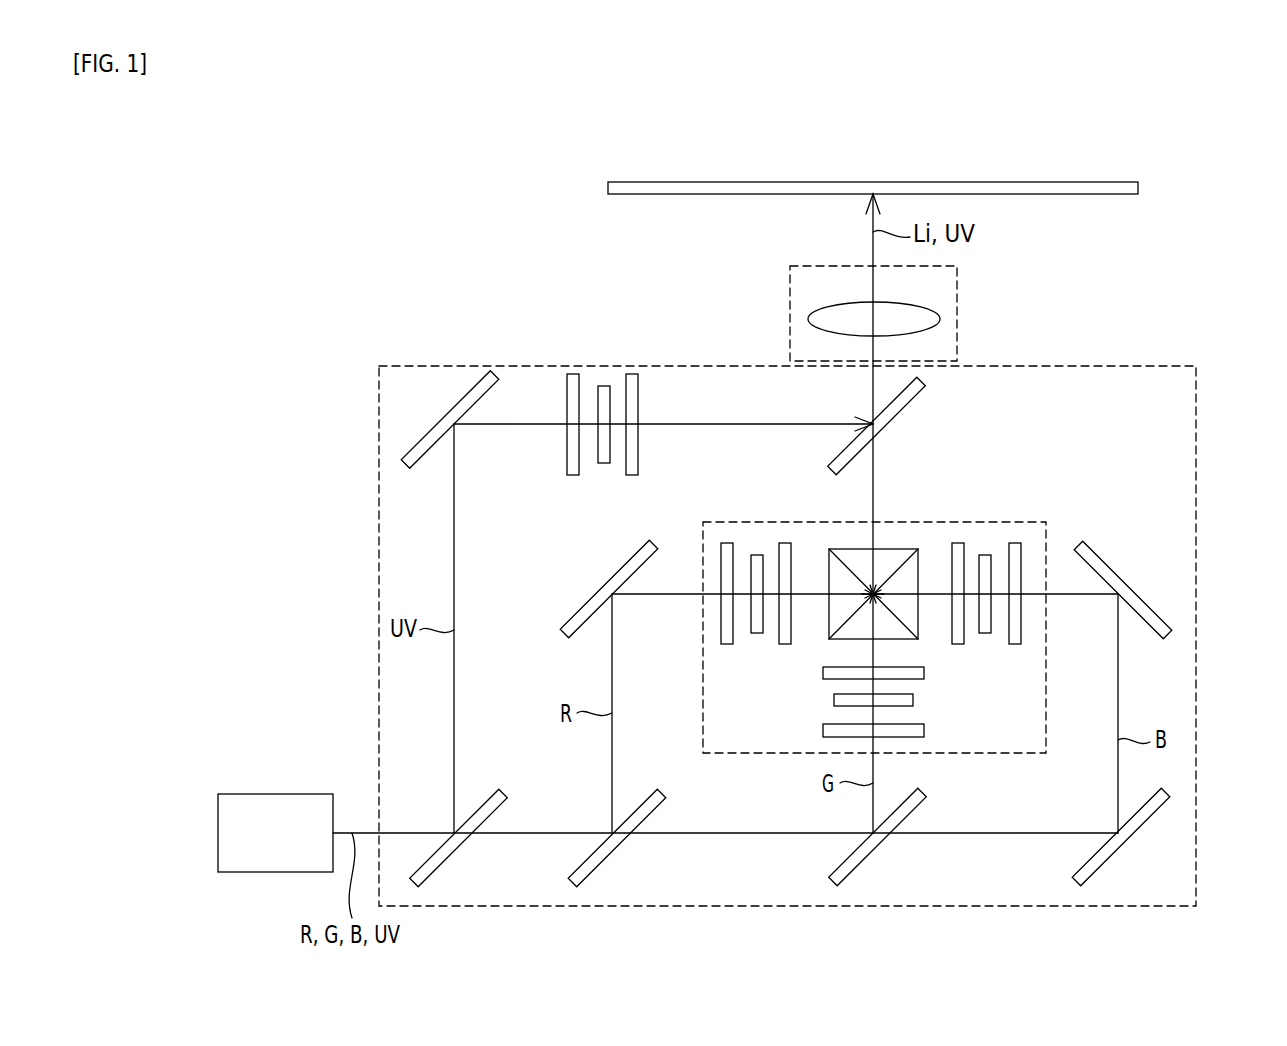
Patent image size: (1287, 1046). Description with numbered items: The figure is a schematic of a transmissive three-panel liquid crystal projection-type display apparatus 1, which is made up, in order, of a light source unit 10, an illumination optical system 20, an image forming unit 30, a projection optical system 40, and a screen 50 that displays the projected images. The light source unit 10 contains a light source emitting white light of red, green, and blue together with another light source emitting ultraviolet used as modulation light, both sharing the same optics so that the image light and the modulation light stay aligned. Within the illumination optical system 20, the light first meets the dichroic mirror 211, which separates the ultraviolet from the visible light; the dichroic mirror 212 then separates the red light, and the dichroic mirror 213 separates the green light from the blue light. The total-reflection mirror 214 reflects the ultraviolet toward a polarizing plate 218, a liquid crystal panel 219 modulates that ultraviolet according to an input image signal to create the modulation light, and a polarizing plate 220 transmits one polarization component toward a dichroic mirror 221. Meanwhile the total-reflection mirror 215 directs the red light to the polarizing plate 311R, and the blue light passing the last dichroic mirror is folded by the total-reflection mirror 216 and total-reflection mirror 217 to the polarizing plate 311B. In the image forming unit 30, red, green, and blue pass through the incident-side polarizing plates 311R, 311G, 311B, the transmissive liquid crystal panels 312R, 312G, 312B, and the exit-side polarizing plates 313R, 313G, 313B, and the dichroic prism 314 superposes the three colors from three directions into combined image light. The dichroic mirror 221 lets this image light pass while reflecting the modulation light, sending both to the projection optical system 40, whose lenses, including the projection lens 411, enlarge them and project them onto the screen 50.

The projection-type display apparatus 1 is at (1175, 162).
The light source unit 10 is at (273, 794).
The illumination optical system 20 is at (1196, 522).
The image forming unit 30 is at (1046, 690).
The projection optical system 40 is at (957, 310).
The screen 50 is at (608, 188).
The dichroic mirror 211 is at (505, 793).
The dichroic mirror 212 is at (662, 793).
The dichroic mirror 213 is at (832, 885).
The total-reflection mirror 214 is at (497, 375).
The total-reflection mirror 215 is at (655, 545).
The total-reflection mirror 216 is at (1075, 885).
The total-reflection mirror 217 is at (1080, 547).
The polarizing plate 218 is at (573, 374).
The liquid crystal panel 219 is at (604, 386).
The polarizing plate 220 is at (632, 374).
The dichroic mirror 221 is at (925, 385).
The polarizing plate 311R is at (727, 543).
The liquid crystal panel 312R is at (757, 555).
The polarizing plate 313R is at (785, 543).
The polarizing plate 311G is at (823, 730).
The liquid crystal panel 312G is at (834, 700).
The polarizing plate 313G is at (823, 672).
The polarizing plate 311B is at (1015, 543).
The liquid crystal panel 312B is at (985, 555).
The polarizing plate 313B is at (958, 543).
The dichroic prism 314 is at (903, 549).
The projection lens 411 is at (808, 319).